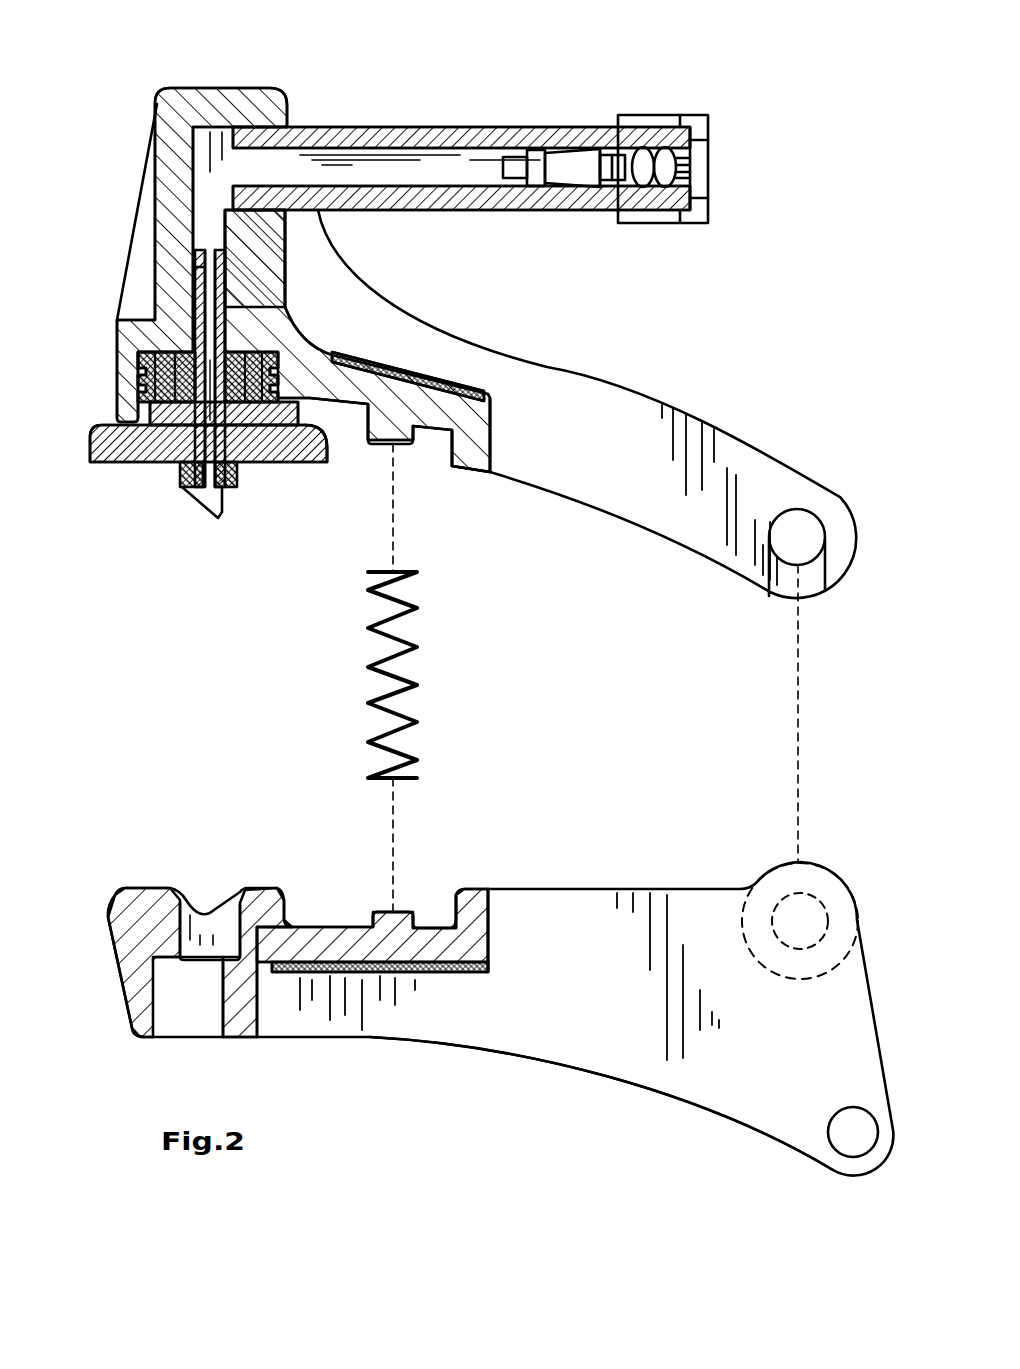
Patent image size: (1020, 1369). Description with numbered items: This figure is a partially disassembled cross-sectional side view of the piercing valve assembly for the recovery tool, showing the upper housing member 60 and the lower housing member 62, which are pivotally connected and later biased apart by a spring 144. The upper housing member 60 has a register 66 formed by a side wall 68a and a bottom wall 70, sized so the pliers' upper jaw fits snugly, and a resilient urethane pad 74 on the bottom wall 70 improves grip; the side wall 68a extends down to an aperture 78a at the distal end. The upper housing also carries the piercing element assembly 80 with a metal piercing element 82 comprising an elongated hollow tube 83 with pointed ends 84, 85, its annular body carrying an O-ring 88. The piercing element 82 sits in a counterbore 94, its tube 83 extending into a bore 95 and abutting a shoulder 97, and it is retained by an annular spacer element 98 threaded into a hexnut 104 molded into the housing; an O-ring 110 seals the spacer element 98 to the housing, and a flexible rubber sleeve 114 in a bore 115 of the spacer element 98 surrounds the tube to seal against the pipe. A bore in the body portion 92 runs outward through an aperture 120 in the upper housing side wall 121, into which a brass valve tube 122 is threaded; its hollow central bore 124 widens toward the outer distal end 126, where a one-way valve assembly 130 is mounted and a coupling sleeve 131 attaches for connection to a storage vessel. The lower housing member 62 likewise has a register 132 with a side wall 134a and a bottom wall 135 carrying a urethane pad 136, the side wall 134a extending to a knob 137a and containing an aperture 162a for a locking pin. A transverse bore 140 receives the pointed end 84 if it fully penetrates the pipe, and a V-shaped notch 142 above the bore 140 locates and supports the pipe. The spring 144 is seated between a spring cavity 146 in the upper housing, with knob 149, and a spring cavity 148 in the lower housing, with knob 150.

The upper housing member 60 is at (223, 88).
The lower housing member 62 is at (110, 932).
The register 66 is at (438, 352).
The side wall 68a is at (622, 403).
The bottom wall 70 is at (492, 402).
The resilient urethane pad 74 is at (358, 360).
The aperture 78a is at (825, 533).
The piercing element assembly 80 is at (257, 476).
The piercing element 82 is at (598, 100).
The elongated hollow tube 83 is at (155, 298).
The pointed end 84 is at (200, 490).
The pointed end 85 is at (155, 228).
The O-ring 88 is at (130, 465).
The body portion 92 is at (150, 180).
The counterbore 94 is at (258, 350).
The bore 95 is at (156, 140).
The shoulder 97 is at (232, 345).
The spacer element 98 is at (305, 462).
The hexnut 104 is at (138, 352).
The O-ring 110 is at (140, 400).
The rubber sleeve 114 is at (180, 470).
The bore 115 is at (170, 465).
The aperture 120 is at (290, 128).
The upper housing side wall 121 is at (290, 216).
The valve tube 122 is at (405, 138).
The hollow central bore 124 is at (410, 182).
The outer distal end 126 is at (694, 200).
The one-way valve assembly 130 is at (600, 188).
The coupling sleeve 131 is at (672, 118).
The register 132 is at (490, 1033).
The side wall 134a is at (617, 892).
The bottom wall 135 is at (488, 975).
The resilient urethane pad 136 is at (415, 975).
The knob 137a is at (795, 862).
The bore 140 is at (226, 906).
The V-shaped notch 142 is at (188, 898).
The spring 144 is at (406, 614).
The spring cavity 146 is at (438, 462).
The spring cavity 148 is at (436, 888).
The knob 149 is at (407, 462).
The knob 150 is at (392, 890).
The aperture 162a is at (857, 1150).